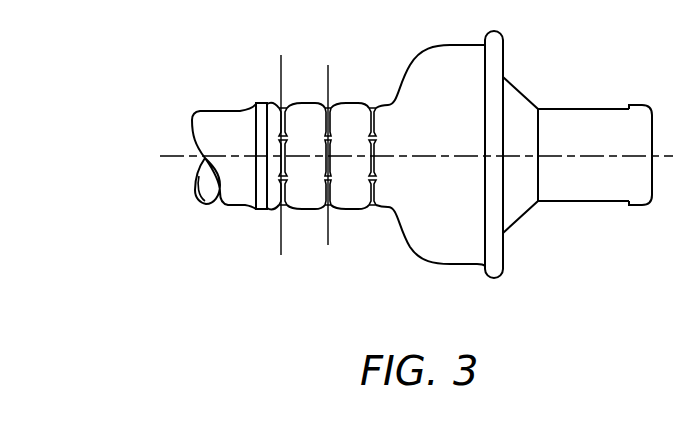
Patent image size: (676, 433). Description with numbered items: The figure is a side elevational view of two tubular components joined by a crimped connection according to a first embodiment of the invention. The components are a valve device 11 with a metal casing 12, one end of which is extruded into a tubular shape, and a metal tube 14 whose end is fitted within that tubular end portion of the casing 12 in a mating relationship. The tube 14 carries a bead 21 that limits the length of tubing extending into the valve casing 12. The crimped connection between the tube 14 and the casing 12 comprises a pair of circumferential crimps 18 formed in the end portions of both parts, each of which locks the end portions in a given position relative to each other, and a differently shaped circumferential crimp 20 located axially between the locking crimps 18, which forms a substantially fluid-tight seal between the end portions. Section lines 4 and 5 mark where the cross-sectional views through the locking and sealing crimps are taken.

The valve device 11 is at (531, 218).
The metal casing 12 is at (458, 265).
The metal tube 14 is at (220, 206).
The circumferential crimps 18 is at (278, 122).
The circumferential crimp 20 is at (333, 122).
The bead 21 is at (261, 210).
The section line 4- 4 is at (298, 255).
The section line 5- 5 is at (345, 245).